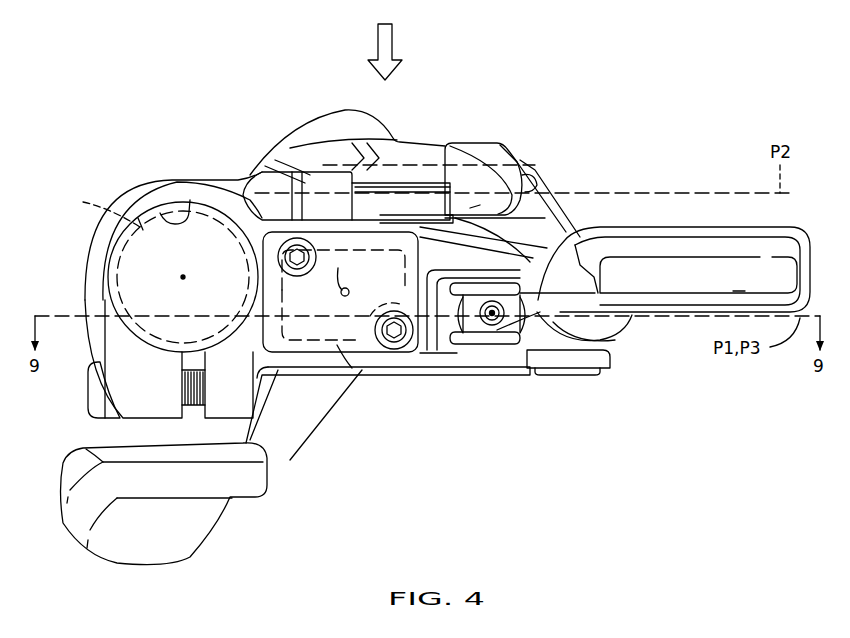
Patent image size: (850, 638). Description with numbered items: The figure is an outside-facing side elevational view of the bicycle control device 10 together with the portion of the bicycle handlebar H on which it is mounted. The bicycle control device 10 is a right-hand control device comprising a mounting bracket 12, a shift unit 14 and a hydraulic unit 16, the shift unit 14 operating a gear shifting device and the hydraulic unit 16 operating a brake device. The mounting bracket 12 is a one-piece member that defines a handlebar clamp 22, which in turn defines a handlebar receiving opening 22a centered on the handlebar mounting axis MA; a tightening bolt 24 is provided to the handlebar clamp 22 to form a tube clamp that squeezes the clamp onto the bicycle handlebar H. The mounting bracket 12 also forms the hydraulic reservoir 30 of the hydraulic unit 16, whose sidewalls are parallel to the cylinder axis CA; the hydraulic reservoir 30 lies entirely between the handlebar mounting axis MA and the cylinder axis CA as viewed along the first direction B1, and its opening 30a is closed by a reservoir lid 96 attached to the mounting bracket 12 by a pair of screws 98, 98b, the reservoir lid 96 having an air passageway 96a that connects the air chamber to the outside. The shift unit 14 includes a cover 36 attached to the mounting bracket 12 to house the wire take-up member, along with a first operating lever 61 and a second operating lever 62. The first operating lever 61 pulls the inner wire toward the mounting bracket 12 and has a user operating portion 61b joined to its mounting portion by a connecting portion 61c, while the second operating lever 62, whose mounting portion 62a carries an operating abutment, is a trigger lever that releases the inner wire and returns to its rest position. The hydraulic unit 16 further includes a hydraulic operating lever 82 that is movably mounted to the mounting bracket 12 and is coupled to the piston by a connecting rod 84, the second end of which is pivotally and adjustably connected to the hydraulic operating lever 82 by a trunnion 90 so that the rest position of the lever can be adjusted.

The bicycle control device 10 is at (622, 133).
The mounting bracket 12 is at (139, 276).
The shift unit 14 is at (518, 158).
The hydraulic unit 16 is at (470, 372).
The handlebar clamp 22 is at (140, 200).
The handlebar receiving opening 22a is at (190, 200).
The tightening bolt 24 is at (88, 398).
The hydraulic reservoir 30 is at (313, 326).
The opening 30a is at (352, 372).
The cover 36 is at (412, 142).
The first operating lever 61 is at (196, 493).
The user operating portion 61b is at (62, 495).
The connecting portion 61c is at (305, 450).
The second operating lever 62 is at (467, 140).
The mounting portion 62a is at (525, 180).
The hydraulic operating lever 82 is at (686, 226).
The connecting rod 84 is at (490, 305).
The trunnion 90 is at (513, 325).
The reservoir lid 96 is at (390, 350).
The air passageway 96a is at (342, 270).
The screws 98 is at (280, 258).
The fastener 98b is at (398, 350).
The first direction B1 is at (392, 38).
The bicycle handlebar H is at (103, 210).
The handlebar mounting axis MA is at (183, 277).
The cylinder axis CA is at (493, 325).